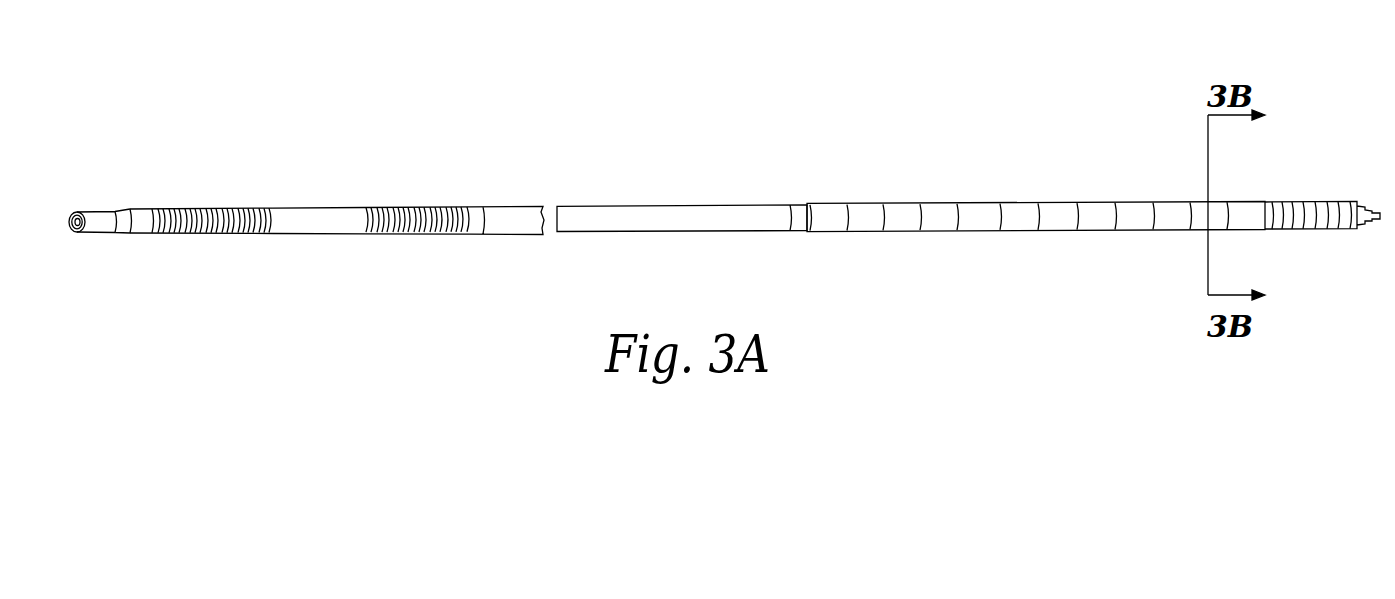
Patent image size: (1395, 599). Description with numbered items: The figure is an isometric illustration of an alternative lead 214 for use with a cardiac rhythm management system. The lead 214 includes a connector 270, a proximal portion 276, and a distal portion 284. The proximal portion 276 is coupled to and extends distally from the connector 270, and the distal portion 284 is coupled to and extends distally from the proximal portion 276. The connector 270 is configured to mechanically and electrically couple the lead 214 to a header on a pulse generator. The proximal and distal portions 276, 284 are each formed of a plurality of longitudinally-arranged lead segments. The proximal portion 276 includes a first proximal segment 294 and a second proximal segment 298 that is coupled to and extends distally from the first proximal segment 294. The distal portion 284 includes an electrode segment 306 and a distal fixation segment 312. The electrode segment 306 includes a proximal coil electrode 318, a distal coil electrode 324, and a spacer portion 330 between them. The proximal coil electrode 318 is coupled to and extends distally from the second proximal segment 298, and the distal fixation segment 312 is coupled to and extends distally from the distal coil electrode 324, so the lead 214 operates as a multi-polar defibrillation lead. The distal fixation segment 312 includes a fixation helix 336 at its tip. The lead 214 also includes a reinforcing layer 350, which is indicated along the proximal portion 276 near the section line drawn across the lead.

The lead 214 is at (381, 85).
The connector 270 is at (1323, 199).
The proximal portion 276 is at (979, 202).
The distal portion 284 is at (310, 208).
The first proximal segment 294 is at (1058, 233).
The second proximal segment 298 is at (706, 205).
The electrode segment 306 is at (356, 234).
The distal fixation segment 312 is at (100, 234).
The proximal coil electrode 318 is at (400, 206).
The distal coil electrode 324 is at (222, 208).
The spacer portion 330 is at (286, 234).
The fixation helix 336 is at (74, 211).
The reinforcing layer 350 is at (1093, 203).